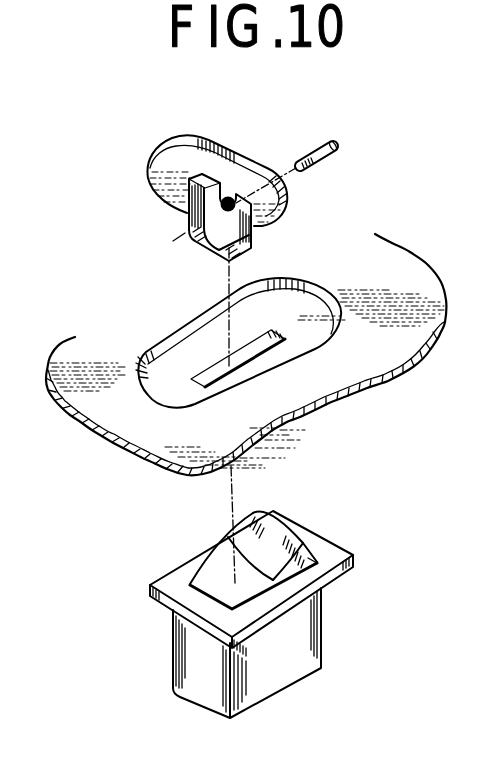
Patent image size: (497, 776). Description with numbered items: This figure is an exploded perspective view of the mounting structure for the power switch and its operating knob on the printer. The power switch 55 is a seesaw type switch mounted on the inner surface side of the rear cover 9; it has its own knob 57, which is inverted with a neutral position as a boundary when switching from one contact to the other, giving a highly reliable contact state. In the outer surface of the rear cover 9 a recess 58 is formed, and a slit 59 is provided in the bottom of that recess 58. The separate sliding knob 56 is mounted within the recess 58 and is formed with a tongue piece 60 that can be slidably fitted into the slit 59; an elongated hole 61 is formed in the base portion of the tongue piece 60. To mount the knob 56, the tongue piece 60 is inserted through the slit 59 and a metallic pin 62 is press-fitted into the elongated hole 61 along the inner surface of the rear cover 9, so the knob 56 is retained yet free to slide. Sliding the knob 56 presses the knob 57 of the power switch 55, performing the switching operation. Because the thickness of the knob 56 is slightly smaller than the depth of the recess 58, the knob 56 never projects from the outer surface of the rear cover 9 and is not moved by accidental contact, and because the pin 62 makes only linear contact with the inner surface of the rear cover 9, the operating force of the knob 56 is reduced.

The rear cover 9 is at (110, 418).
The power switch 55 is at (310, 632).
The knob 56 is at (155, 162).
The knob 57 is at (273, 545).
The recess 58 is at (141, 366).
The slit 59 is at (208, 372).
The tongue piece 60 is at (251, 237).
The elongated hole 61 is at (251, 204).
The metallic pin 62 is at (321, 145).